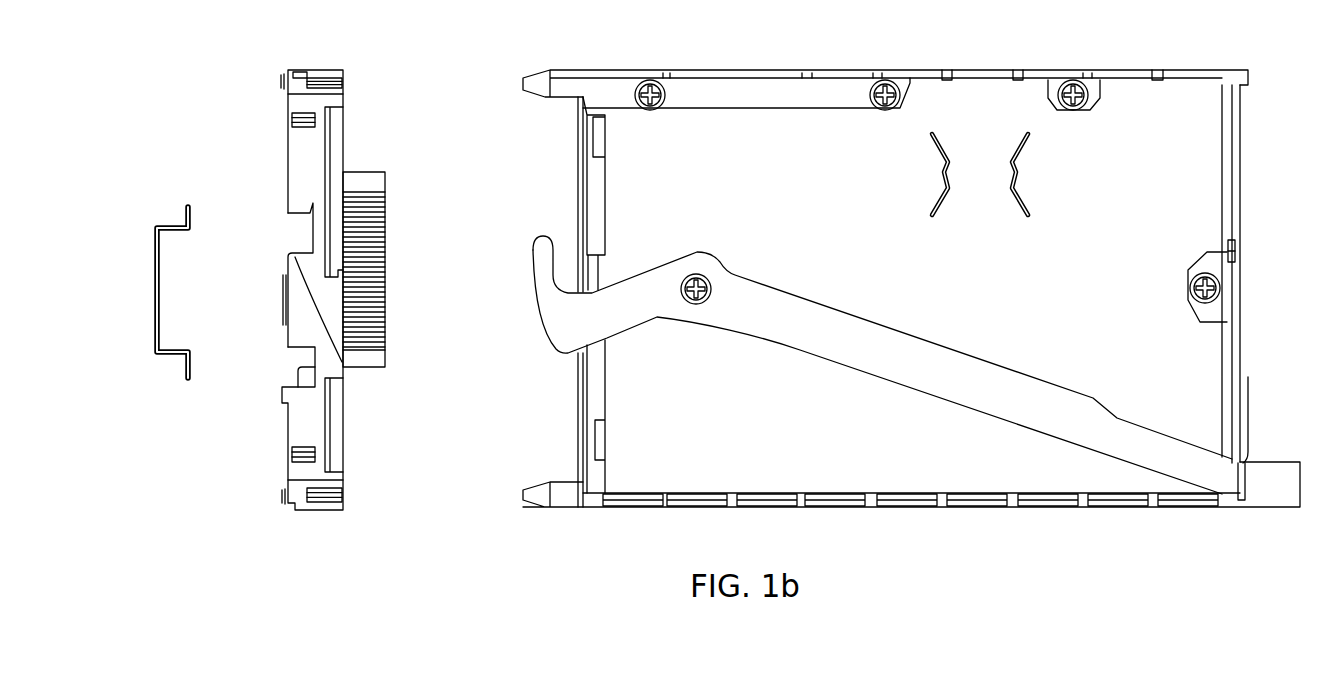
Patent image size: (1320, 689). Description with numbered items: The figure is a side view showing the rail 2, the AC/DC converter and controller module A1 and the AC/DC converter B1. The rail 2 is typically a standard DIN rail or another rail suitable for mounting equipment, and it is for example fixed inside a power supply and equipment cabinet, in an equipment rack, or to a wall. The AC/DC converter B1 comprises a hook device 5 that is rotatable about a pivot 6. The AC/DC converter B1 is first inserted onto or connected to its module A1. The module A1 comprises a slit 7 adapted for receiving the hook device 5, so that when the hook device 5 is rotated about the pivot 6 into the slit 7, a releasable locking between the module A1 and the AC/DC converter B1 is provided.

The rail 2 is at (187, 206).
The AC/DC converter and controller module A1 is at (310, 73).
The slit 7 is at (322, 308).
The AC/DC converter B1 is at (973, 105).
The hook device 5 is at (545, 328).
The pivot 6 is at (702, 303).